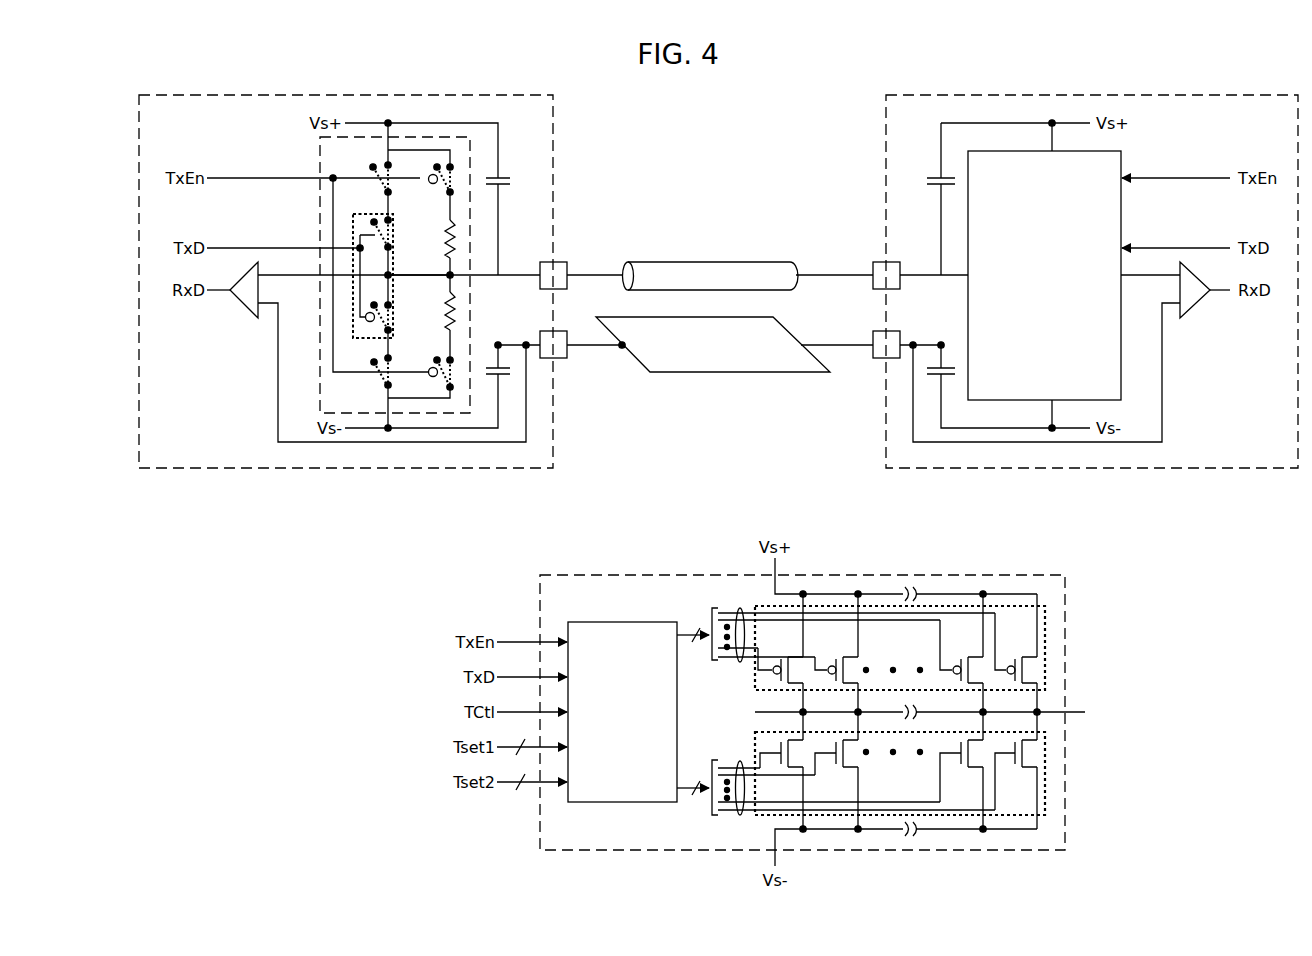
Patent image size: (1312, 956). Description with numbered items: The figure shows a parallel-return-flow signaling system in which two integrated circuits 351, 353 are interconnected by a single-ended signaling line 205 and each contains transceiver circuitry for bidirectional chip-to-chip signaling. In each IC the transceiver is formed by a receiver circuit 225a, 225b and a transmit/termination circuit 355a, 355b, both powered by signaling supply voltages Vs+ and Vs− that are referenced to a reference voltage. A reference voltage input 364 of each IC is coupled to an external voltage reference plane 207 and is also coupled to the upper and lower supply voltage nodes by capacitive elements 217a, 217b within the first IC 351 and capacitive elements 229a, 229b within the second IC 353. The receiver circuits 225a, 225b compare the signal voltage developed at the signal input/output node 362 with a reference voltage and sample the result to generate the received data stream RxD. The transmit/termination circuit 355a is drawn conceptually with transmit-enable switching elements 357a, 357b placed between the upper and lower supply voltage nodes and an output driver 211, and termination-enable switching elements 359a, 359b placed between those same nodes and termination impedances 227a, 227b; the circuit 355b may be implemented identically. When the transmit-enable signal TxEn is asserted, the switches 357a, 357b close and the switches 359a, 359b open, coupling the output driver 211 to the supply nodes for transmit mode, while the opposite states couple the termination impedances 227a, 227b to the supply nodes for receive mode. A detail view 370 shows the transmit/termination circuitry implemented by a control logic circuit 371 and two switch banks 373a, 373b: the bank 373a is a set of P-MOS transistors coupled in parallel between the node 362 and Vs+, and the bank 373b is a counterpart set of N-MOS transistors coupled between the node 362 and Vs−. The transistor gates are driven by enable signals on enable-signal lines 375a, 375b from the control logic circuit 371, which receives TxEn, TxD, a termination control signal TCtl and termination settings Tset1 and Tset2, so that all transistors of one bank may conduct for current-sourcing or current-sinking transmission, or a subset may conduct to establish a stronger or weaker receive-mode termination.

The integrated circuit 351 is at (346, 281).
The integrated circuit 353 is at (1092, 281).
The transmit/termination circuit 355a is at (320, 156).
The transmit/termination circuit 355b is at (1044, 275).
The transmit-enable switching element 357a is at (370, 172).
The transmit-enable switching element 357b is at (375, 376).
The termination-enable switching element 359a is at (430, 184).
The termination-enable switching element 359b is at (428, 366).
The output driver 211 is at (382, 213).
The termination impedance 227a is at (413, 237).
The termination impedance 227b is at (413, 312).
The signal input/output node 362 is at (395, 284).
The reference voltage input 364 is at (540, 340).
The capacitive element 217a is at (504, 176).
The capacitive element 217b is at (513, 373).
The receiver circuit 225a is at (247, 300).
The receiver circuit 225b is at (1193, 300).
The single-ended signaling line 205 is at (783, 290).
The external voltage reference plane 207 is at (740, 373).
The capacitive element 229a is at (936, 176).
The capacitive element 229b is at (925, 372).
The detail view 370 is at (430, 405).
The control logic circuit 371 is at (622, 712).
The switch bank 373a is at (900, 653).
The switch bank 373b is at (900, 770).
The enable-signal lines 375a is at (738, 662).
The enable-signal lines 375b is at (738, 762).